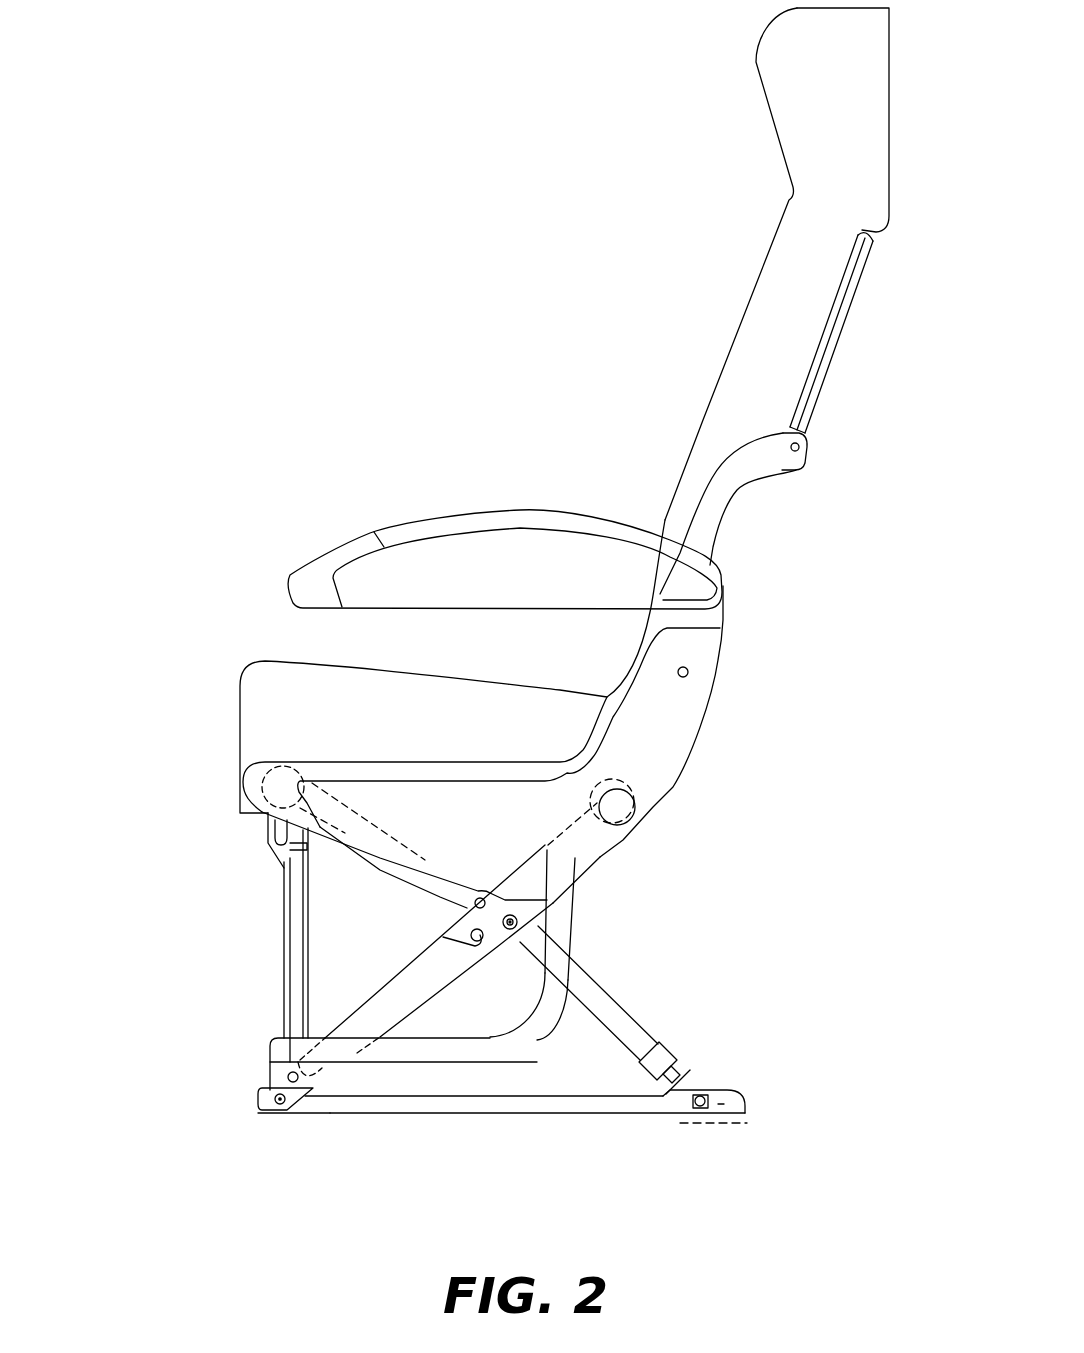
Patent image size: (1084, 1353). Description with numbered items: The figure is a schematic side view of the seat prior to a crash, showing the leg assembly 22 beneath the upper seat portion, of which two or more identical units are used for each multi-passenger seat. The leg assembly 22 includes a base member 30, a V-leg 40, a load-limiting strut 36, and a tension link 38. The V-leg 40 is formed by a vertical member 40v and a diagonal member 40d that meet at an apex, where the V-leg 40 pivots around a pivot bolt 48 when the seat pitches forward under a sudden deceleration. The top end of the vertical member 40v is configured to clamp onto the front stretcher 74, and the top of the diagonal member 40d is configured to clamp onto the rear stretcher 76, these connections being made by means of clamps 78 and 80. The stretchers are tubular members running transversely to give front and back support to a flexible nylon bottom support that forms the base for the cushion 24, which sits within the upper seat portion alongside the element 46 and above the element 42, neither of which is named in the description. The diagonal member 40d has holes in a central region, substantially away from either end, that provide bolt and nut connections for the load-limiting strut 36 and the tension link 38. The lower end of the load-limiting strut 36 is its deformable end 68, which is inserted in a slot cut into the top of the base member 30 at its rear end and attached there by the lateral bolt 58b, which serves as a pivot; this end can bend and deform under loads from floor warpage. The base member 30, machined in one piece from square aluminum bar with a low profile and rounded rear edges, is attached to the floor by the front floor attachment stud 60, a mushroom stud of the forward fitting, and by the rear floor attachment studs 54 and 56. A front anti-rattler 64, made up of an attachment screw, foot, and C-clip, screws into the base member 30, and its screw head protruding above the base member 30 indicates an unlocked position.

The leg assembly 22 is at (132, 962).
The cushion 24 is at (268, 722).
The base member 30 is at (481, 1116).
The load-limiting strut 36 is at (583, 973).
The tension link 38 is at (432, 877).
The V-leg 40 is at (306, 985).
The vertical member 40v is at (283, 940).
The diagonal member 40d is at (433, 998).
The rear link 42 is at (577, 927).
The seat shell 46 is at (703, 727).
The pivot bolt 48 is at (270, 1073).
The rear floor attachment stud 54 is at (740, 1127).
The rear floor attachment stud 56 is at (677, 1125).
The bolt 58b is at (707, 1127).
The front floor attachment stud 60 is at (290, 1121).
The front anti-rattler 64 is at (258, 1110).
The deformable end 68 is at (683, 1075).
The front stretcher 74 is at (263, 793).
The rear stretcher 76 is at (623, 806).
The clamp 78 is at (265, 846).
The clamp 80 is at (625, 840).